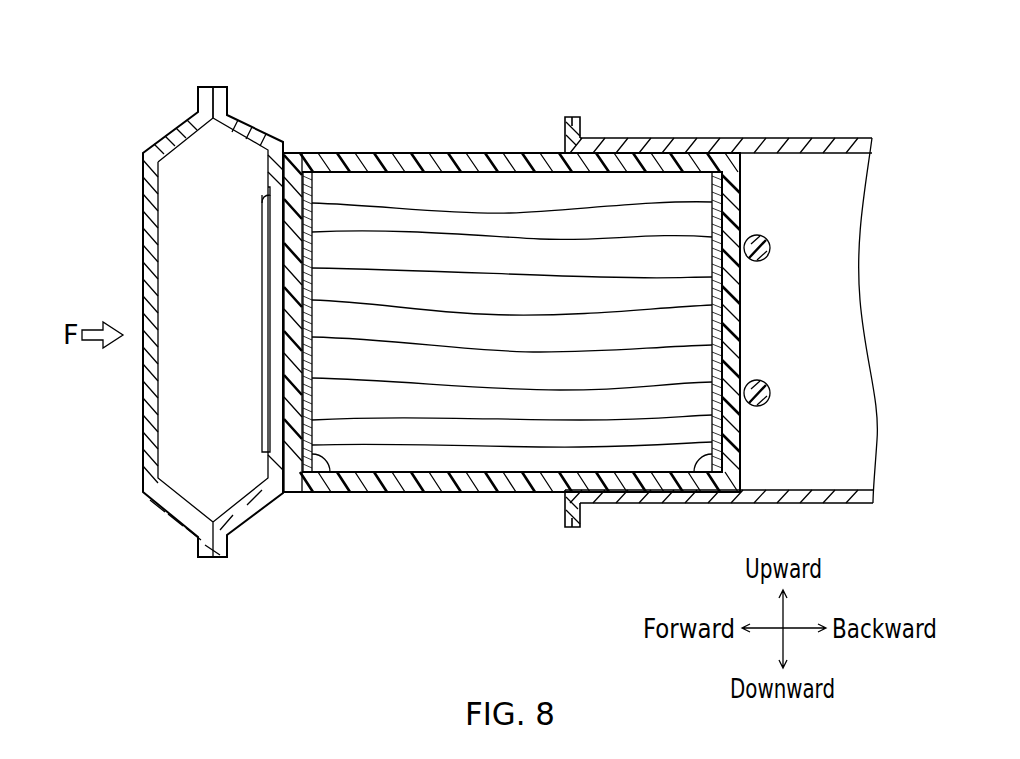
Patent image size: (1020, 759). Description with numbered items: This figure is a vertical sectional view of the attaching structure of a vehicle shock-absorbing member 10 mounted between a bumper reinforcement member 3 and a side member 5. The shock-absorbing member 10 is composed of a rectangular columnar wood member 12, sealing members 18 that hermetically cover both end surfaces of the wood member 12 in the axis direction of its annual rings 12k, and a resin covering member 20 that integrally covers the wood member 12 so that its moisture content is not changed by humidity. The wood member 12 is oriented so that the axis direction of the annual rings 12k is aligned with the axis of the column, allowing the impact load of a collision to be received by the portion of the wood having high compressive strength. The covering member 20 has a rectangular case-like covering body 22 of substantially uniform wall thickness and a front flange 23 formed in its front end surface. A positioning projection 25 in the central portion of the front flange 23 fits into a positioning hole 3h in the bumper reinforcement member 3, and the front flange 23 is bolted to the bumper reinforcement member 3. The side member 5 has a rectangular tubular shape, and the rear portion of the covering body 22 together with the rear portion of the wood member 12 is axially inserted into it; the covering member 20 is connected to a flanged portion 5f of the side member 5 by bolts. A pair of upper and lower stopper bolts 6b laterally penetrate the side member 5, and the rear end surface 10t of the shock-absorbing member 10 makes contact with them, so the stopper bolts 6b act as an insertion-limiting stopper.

The shock-absorbing member 10 is at (487, 119).
The covering member 20 is at (366, 152).
The front flange 23 is at (293, 196).
The wood member 12 is at (512, 276).
The annual rings 12k is at (530, 240).
The flanged portion 5f is at (577, 117).
The covering body 22 is at (638, 150).
The side member 5 is at (718, 322).
The bumper reinforcement member 3 is at (133, 266).
The positioning hole 3h is at (262, 203).
The positioning projection 25 is at (262, 331).
The stopper bolt 6b is at (770, 252).
The rear end surface 10t is at (742, 336).
The sealing member 18 is at (700, 470).